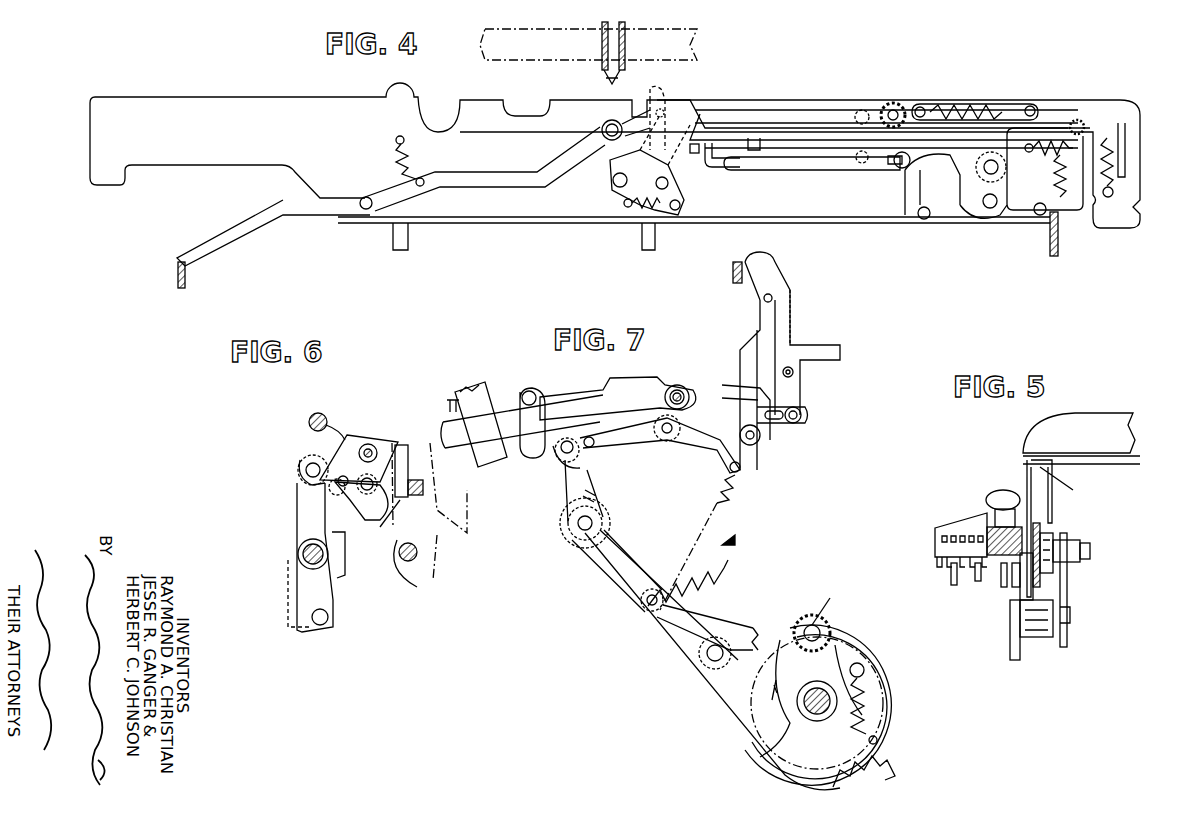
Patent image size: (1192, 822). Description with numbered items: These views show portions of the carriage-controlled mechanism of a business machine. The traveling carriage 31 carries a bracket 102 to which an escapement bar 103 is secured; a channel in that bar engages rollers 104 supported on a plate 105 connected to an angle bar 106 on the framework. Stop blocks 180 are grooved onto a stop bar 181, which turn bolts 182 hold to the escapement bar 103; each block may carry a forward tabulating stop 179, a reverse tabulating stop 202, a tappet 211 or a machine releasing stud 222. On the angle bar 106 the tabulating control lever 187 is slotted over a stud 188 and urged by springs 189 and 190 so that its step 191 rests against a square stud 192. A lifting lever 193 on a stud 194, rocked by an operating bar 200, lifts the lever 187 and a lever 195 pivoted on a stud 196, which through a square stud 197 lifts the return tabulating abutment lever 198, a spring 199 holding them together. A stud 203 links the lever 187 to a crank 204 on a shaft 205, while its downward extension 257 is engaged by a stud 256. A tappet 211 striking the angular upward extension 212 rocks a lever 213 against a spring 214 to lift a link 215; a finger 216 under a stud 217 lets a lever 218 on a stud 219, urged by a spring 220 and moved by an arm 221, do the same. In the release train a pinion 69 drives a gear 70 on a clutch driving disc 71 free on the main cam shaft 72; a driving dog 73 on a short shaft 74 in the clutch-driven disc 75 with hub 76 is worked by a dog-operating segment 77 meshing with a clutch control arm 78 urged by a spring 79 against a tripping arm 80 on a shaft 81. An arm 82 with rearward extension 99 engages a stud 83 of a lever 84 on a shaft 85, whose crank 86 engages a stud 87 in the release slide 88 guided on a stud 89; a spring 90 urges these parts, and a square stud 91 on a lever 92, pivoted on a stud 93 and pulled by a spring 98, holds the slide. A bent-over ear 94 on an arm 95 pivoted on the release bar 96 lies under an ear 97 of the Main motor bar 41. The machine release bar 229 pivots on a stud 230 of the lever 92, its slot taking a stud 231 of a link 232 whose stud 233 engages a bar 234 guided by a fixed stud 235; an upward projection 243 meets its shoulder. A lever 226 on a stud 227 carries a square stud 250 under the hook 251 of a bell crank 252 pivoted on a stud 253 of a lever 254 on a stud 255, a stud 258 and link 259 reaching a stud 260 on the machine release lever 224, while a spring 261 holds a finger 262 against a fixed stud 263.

In FIG. 4, the traveling carriage 31 is at (512, 63).
In FIG. 5, the traveling carriage 31 is at (1122, 420).
In FIG. 4, the angle bar 106 is at (242, 104).
In FIG. 5, the angle bar 106 is at (1020, 660).
In FIG. 4, the carriage stop block 180 is at (625, 24).
In FIG. 5, the carriage stop block 180 is at (950, 525).
In FIG. 4, the stop bar 181 is at (688, 40).
In FIG. 5, the stop bar 181 is at (985, 520).
In FIG. 5, the turn bolt 182 is at (1008, 494).
In FIG. 4, the tappet 211 is at (606, 76).
In FIG. 5, the tappet 211 is at (975, 590).
In FIG. 4, the angular upward extension 212 is at (660, 90).
In FIG. 4, the return tabulating abutment lever 198 is at (680, 110).
In FIG. 4, the tabulating control lever 187 is at (735, 110).
In FIG. 6, the tabulating control lever 187 is at (351, 561).
In FIG. 4, the lever 213 is at (775, 115).
In FIG. 4, the step 191 is at (812, 120).
In FIG. 4, the spring 199 is at (862, 108).
In FIG. 4, the stud 196 is at (893, 102).
In FIG. 4, the stud 188 is at (925, 104).
In FIG. 4, the spring 189 is at (970, 104).
In FIG. 4, the link 215 is at (1062, 200).
In FIG. 4, the spring 214 is at (1085, 128).
In FIG. 4, the finger 216 is at (622, 124).
In FIG. 4, the stud 217 is at (600, 128).
In FIG. 4, the spring 220 is at (396, 150).
In FIG. 4, the lever 218 is at (480, 178).
In FIG. 4, the stud 219 is at (362, 198).
In FIG. 4, the spring 190 is at (618, 196).
In FIG. 4, the square stud 192 is at (694, 154).
In FIG. 4, the lever 195 is at (730, 165).
In FIG. 4, the square stud 197 is at (760, 150).
In FIG. 4, the lifting lever 193 is at (814, 160).
In FIG. 4, the stud 194 is at (895, 165).
In FIG. 4, the stud 203 is at (983, 170).
In FIG. 4, the crank 204 is at (983, 204).
In FIG. 4, the downward extension 257 is at (903, 205).
In FIG. 6, the downward extension 257 is at (290, 594).
In FIG. 4, the stud 256 is at (926, 220).
In FIG. 6, the stud 256 is at (330, 617).
In FIG. 4, the shaft 205 is at (1038, 216).
In FIG. 4, the operating bar 200 is at (1118, 171).
In FIG. 4, the arm 221 is at (186, 283).
In FIG. 7, the lever 226 is at (732, 269).
In FIG. 6, the lever 226 is at (408, 577).
In FIG. 7, the upward projection 243 is at (764, 258).
In FIG. 7, the machine release bar 229 is at (752, 294).
In FIG. 7, the stud 231 is at (772, 297).
In FIG. 7, the link 232 is at (792, 335).
In FIG. 7, the Main motor bar 41 is at (470, 388).
In FIG. 7, the ear 97 is at (450, 402).
In FIG. 7, the release slide 88 is at (600, 392).
In FIG. 7, the stud 89 is at (678, 389).
In FIG. 7, the bar 234 is at (735, 390).
In FIG. 7, the stud 233 is at (800, 422).
In FIG. 7, the fixed stud 235 is at (776, 422).
In FIG. 7, the stud 230 is at (755, 455).
In FIG. 7, the stud 93 is at (675, 424).
In FIG. 7, the stud 87 is at (569, 436).
In FIG. 7, the square stud 91 is at (590, 437).
In FIG. 7, the release bar 96 is at (490, 445).
In FIG. 7, the arm 95 is at (530, 452).
In FIG. 7, the bent-over ear 94 is at (556, 468).
In FIG. 7, the crank 86 is at (563, 495).
In FIG. 7, the shaft 85 is at (597, 520).
In FIG. 7, the lever 84 is at (625, 555).
In FIG. 7, the lever 92 is at (638, 440).
In FIG. 7, the spring 98 is at (722, 482).
In FIG. 7, the spring 90 is at (697, 556).
In FIG. 7, the stud 83 is at (660, 596).
In FIG. 7, the arm 82 is at (675, 612).
In FIG. 7, the rearward extension 99 is at (755, 626).
In FIG. 7, the gear 70 is at (790, 618).
In FIG. 7, the driving dog 73 is at (805, 618).
In FIG. 7, the dog-operating segment 77 is at (822, 599).
In FIG. 7, the short shaft 74 is at (825, 628).
In FIG. 7, the clutch-driven disc 75 is at (872, 645).
In FIG. 7, the clutch driving disc 71 is at (880, 675).
In FIG. 7, the spring 79 is at (870, 708).
In FIG. 7, the short shaft 81 is at (705, 658).
In FIG. 7, the tripping arm 80 is at (725, 705).
In FIG. 7, the hub 76 is at (814, 684).
In FIG. 7, the main cam shaft 72 is at (810, 722).
In FIG. 7, the clutch control arm 78 is at (835, 725).
In FIG. 7, the pinion 69 is at (888, 774).
In FIG. 6, the fixed stud 263 is at (310, 418).
In FIG. 6, the finger 262 is at (338, 428).
In FIG. 6, the machine release lever 224 is at (375, 445).
In FIG. 6, the stud 260 is at (385, 440).
In FIG. 6, the spring 261 is at (402, 445).
In FIG. 6, the link 259 is at (345, 455).
In FIG. 6, the stud 253 is at (298, 466).
In FIG. 6, the stud 258 is at (338, 483).
In FIG. 6, the lever 254 is at (297, 504).
In FIG. 6, the bell crank 252 is at (372, 500).
In FIG. 6, the hook 251 is at (370, 523).
In FIG. 6, the square stud 250 is at (429, 511).
In FIG. 6, the stud 255 is at (300, 555).
In FIG. 6, the stud 227 is at (417, 553).
In FIG. 5, the bracket 102 is at (1065, 528).
In FIG. 5, the escapement bar 103 is at (1053, 530).
In FIG. 5, the roller 104 is at (1075, 545).
In FIG. 5, the plate 105 is at (1068, 582).
In FIG. 5, the forward tabulating stop 179 is at (1035, 596).
In FIG. 5, the reverse tabulating stop 202 is at (1000, 590).
In FIG. 5, the machine releasing stud 222 is at (1015, 595).